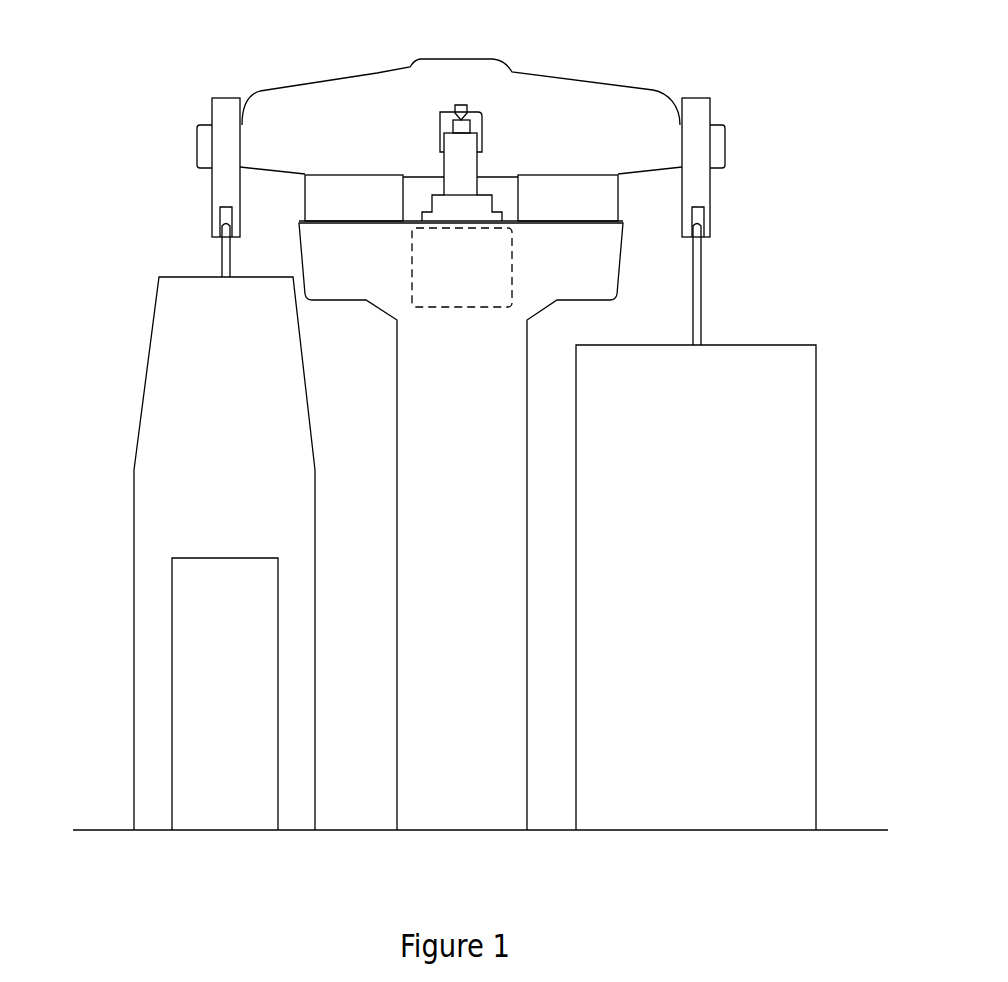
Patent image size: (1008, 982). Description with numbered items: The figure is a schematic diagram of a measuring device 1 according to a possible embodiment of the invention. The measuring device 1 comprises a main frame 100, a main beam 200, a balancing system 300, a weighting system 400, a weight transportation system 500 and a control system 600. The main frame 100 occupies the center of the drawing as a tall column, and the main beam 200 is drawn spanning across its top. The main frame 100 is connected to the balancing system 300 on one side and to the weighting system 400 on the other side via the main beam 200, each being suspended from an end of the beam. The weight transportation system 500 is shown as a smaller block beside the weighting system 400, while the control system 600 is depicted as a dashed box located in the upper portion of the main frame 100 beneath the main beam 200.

The measuring device 1 is at (205, 145).
The main frame 100 is at (457, 493).
The main beam 200 is at (530, 118).
The balancing system 300 is at (755, 397).
The weighting system 400 is at (183, 387).
The weight transportation system 500 is at (260, 602).
The control system 600 is at (428, 262).